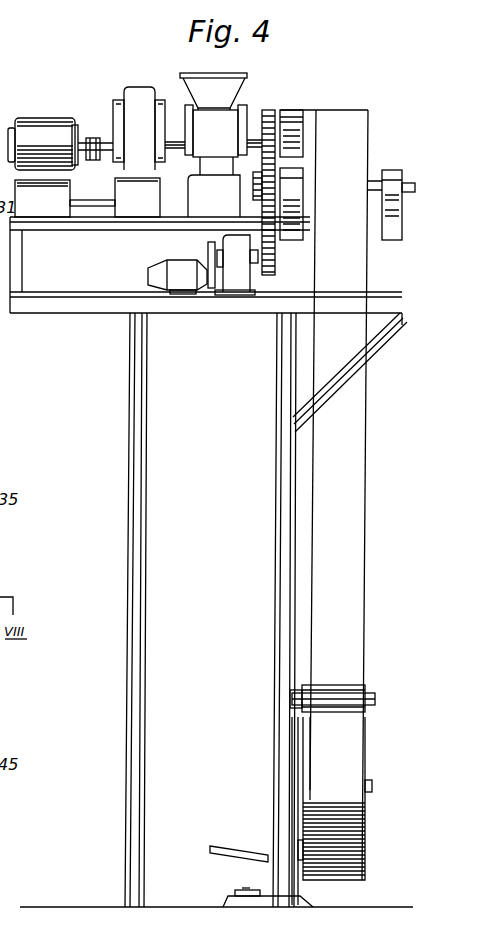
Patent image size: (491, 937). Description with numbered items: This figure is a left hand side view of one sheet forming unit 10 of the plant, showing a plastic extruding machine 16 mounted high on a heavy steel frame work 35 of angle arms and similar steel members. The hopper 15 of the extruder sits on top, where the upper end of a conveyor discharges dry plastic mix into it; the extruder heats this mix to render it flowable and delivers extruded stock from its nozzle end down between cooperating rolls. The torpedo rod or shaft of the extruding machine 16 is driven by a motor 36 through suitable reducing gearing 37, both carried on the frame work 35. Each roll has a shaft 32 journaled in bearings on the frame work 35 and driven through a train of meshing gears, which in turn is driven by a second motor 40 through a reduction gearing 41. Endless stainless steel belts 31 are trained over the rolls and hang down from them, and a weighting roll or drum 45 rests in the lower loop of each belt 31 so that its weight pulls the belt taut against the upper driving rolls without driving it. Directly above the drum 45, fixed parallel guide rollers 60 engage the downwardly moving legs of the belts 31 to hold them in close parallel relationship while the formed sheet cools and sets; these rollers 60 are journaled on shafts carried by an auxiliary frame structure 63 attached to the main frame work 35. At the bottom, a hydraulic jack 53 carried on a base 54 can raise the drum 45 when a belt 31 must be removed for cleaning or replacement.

The sheet forming unit 10 is at (168, 86).
The hopper 15 is at (233, 77).
The plastic extruding machine 16 is at (224, 122).
The endless stainless steel belt 31 is at (352, 148).
The shaft 32 is at (373, 178).
The steel frame work 35 is at (75, 278).
The motor 36 is at (61, 153).
The reducing gearing 37 is at (133, 97).
The motor 40 is at (185, 290).
The reduction gearing 41 is at (245, 280).
The weighting roll or drum 45 is at (365, 762).
The hydraulic jack 53 is at (295, 866).
The base 54 is at (234, 898).
The guide roller 60 is at (350, 688).
The auxiliary frame structure 63 is at (372, 700).